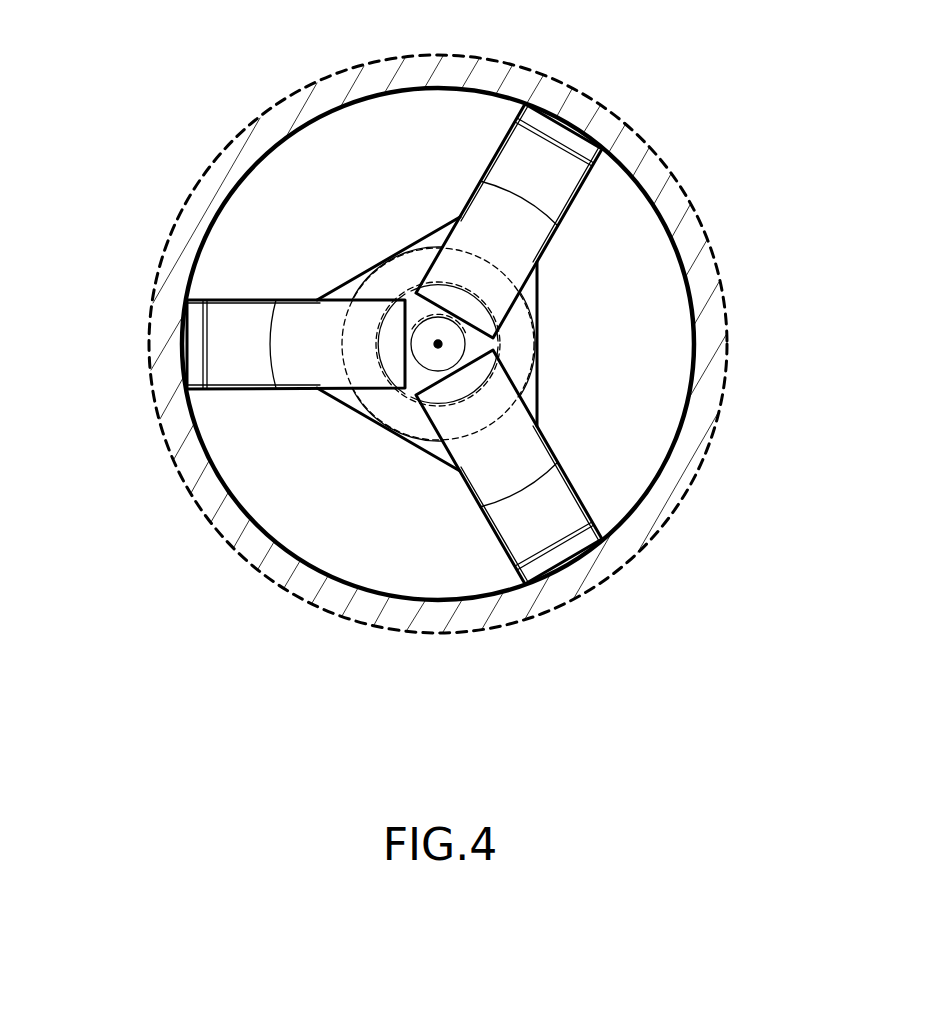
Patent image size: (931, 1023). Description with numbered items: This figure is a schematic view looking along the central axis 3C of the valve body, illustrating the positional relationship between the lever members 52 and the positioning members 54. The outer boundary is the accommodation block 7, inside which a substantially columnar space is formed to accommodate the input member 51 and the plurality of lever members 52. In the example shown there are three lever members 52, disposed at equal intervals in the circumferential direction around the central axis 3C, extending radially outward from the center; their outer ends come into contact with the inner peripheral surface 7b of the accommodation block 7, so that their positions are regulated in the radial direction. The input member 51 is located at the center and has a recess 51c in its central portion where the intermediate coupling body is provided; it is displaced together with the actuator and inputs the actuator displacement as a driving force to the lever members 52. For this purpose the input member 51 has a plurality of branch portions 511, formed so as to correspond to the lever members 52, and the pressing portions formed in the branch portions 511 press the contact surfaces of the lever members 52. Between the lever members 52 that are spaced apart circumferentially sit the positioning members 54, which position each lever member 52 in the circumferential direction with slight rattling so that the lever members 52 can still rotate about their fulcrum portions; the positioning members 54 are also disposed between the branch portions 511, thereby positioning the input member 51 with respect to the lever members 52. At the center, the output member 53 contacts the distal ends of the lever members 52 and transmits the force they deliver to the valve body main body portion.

The accommodation block 7 is at (261, 128).
The inner peripheral surface 7b is at (228, 495).
The input member 51 is at (540, 330).
The branch portions 511 is at (573, 212).
The recess 51c is at (428, 316).
The lever members 52 is at (561, 133).
The output member 53 is at (363, 278).
The positioning members 54 is at (358, 142).
The central axis 3C is at (436, 346).